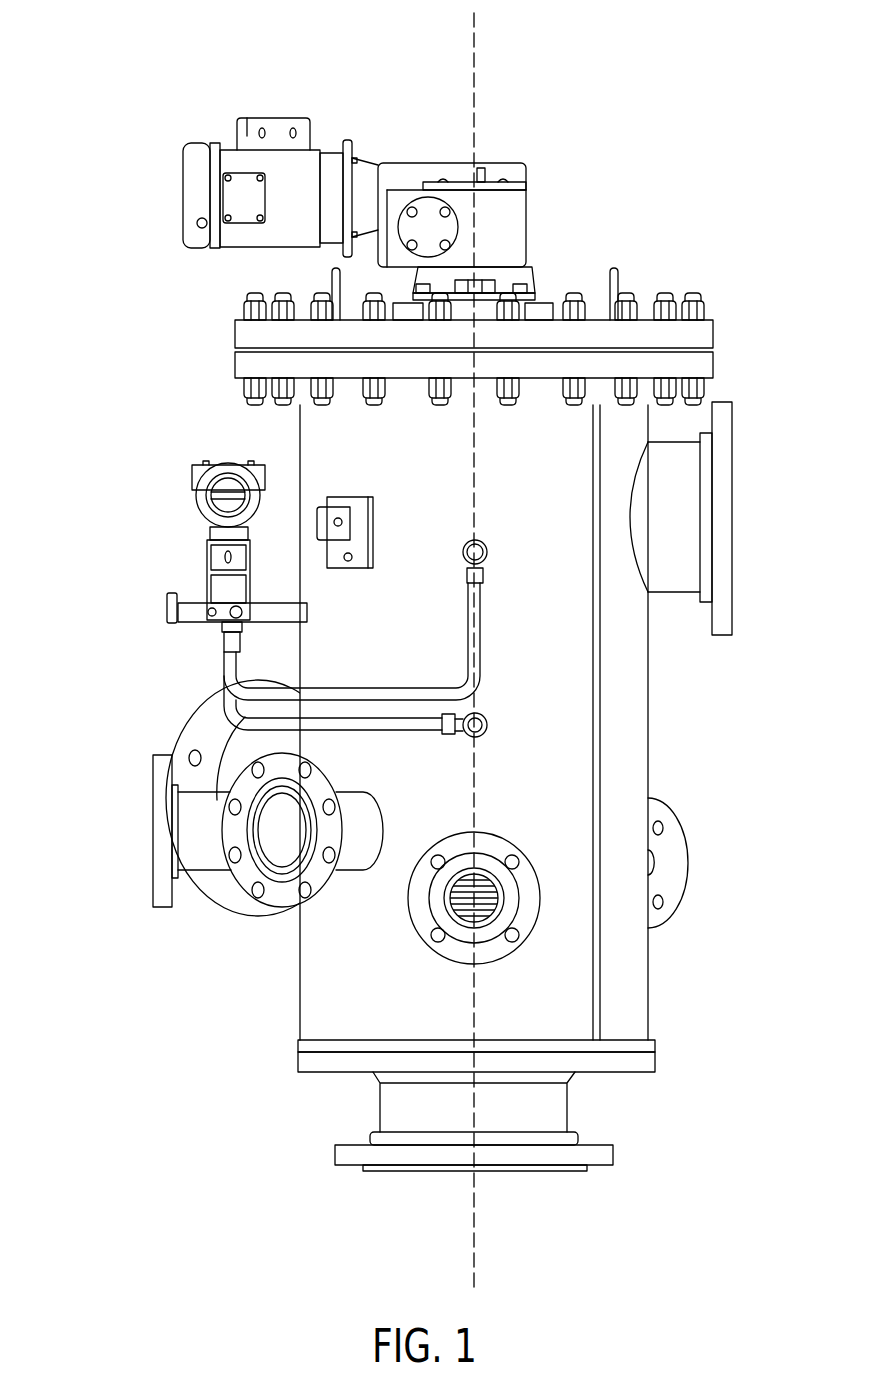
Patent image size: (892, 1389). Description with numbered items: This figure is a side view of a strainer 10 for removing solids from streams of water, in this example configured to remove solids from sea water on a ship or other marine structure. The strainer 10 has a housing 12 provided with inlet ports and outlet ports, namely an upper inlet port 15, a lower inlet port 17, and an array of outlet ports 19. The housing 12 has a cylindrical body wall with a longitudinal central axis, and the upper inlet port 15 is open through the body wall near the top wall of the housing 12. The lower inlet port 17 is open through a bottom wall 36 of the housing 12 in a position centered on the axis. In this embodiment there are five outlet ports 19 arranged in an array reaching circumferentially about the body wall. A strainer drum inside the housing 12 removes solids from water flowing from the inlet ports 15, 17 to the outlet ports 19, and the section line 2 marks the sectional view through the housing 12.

The strainer 10 is at (172, 78).
The housing 12 is at (284, 429).
The upper inlet port 15 is at (723, 475).
The outlet ports 19 is at (255, 845).
The bottom wall 36 is at (338, 1154).
The lower inlet port 17 is at (400, 1170).
The section line 2- 2 is at (474, 13).